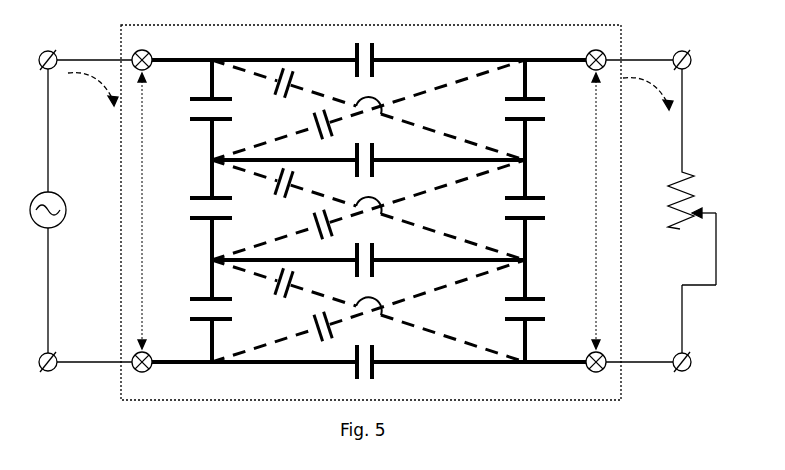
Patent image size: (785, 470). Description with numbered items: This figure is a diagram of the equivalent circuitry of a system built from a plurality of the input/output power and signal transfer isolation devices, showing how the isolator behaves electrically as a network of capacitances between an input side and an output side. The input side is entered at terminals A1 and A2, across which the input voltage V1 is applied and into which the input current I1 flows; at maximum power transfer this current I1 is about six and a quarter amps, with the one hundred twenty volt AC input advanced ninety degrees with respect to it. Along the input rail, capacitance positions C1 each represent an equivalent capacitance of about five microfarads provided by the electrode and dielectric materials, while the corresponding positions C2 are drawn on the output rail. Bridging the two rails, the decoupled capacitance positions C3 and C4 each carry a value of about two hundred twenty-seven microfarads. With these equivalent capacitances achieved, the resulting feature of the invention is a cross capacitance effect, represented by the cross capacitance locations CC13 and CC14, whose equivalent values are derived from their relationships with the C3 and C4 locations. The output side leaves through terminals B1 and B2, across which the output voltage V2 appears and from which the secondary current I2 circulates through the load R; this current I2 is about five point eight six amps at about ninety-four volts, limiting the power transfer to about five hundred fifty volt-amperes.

The first input terminal A1 is at (142, 50).
The first output terminal B1 is at (596, 50).
The second input terminal A2 is at (142, 373).
The second output terminal B2 is at (596, 373).
The capacitance position C1 is at (200, 209).
The second capacitor C2 is at (538, 209).
The decoupled capacitance position C3 is at (363, 153).
The decoupled capacitance position C4 is at (364, 254).
The cross capacitance location CC14 is at (368, 211).
The cross capacitance location CC13 is at (368, 211).
The input voltage V1 is at (152, 211).
The output voltage V2 is at (605, 211).
The maximum current I1 is at (93, 89).
The secondary current I2 is at (648, 94).
The load resistor R is at (692, 211).